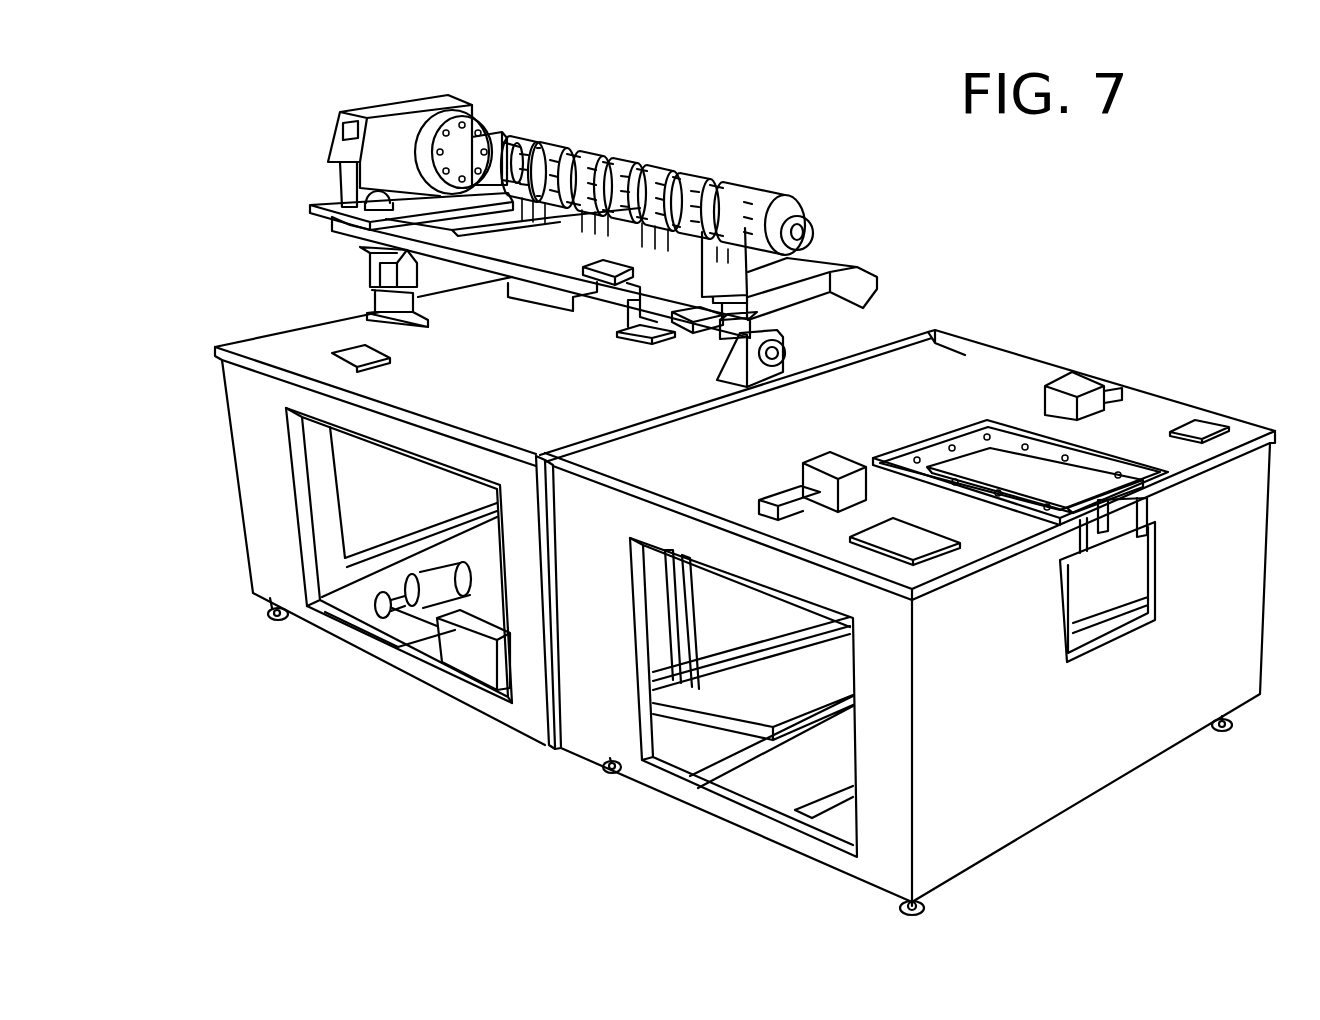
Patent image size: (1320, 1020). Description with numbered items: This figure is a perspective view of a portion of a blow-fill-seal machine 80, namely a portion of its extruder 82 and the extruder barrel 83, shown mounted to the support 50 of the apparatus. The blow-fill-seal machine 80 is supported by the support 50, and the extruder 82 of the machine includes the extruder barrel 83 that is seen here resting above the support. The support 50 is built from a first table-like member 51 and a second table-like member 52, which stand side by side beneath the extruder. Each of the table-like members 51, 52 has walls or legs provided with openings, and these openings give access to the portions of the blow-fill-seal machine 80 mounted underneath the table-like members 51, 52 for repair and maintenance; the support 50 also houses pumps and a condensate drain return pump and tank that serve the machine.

The support 50 is at (468, 713).
The first table-like member 51 is at (1266, 562).
The second table-like member 52 is at (238, 468).
The blow-fill-seal machine 80 is at (394, 170).
The extruder 82 is at (440, 116).
The extruder barrel 83 is at (737, 182).